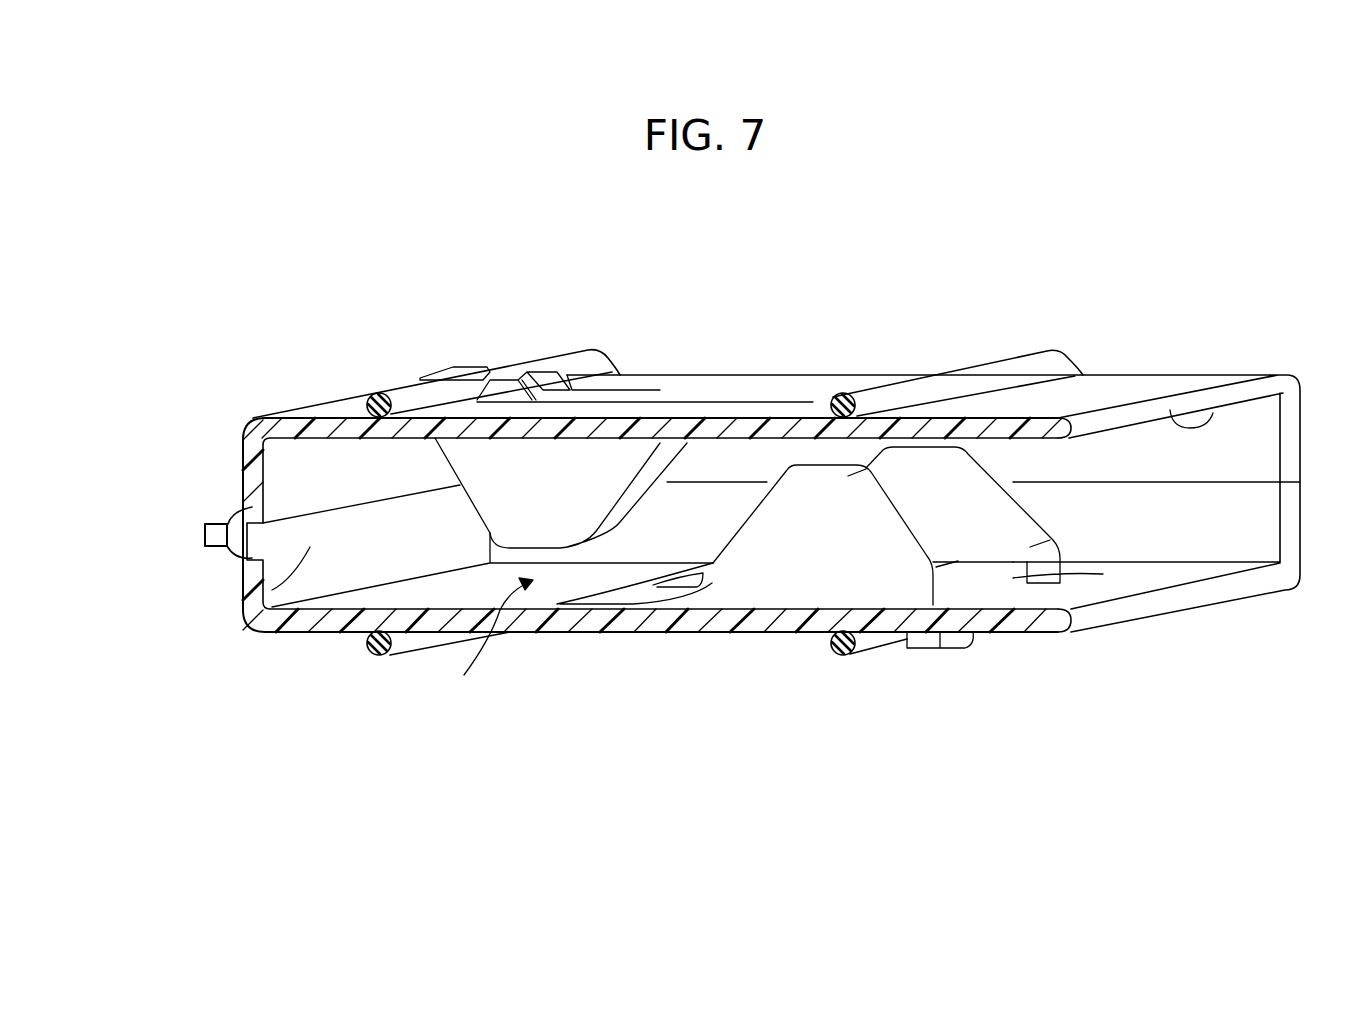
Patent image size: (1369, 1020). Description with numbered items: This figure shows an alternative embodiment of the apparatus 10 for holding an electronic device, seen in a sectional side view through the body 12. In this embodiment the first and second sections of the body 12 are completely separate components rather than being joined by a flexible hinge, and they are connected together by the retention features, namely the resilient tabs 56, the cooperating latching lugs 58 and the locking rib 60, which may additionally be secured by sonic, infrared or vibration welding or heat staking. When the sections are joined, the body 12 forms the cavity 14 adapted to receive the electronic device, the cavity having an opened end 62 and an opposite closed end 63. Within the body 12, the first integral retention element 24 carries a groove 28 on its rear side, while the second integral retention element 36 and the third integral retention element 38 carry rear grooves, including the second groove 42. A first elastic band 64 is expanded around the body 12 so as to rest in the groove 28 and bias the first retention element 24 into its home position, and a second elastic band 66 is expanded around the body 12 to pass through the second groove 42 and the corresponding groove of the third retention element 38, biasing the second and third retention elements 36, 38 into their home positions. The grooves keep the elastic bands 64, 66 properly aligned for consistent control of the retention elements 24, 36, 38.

The apparatus 10 is at (1073, 290).
The body 12 is at (247, 420).
The cavity 14 is at (486, 641).
The first integral retention element 24 is at (601, 493).
The groove 28 is at (513, 390).
The second integral retention element 36 is at (757, 535).
The third integral retention element 38 is at (980, 545).
The second groove 42 is at (902, 648).
The resilient tabs 56 is at (225, 518).
The latching lugs 58 is at (207, 535).
The locking rib 60 is at (222, 548).
The opened end 62 is at (1213, 413).
The closed end 63 is at (272, 590).
The first elastic band 64 is at (403, 397).
The second elastic band 66 is at (964, 373).